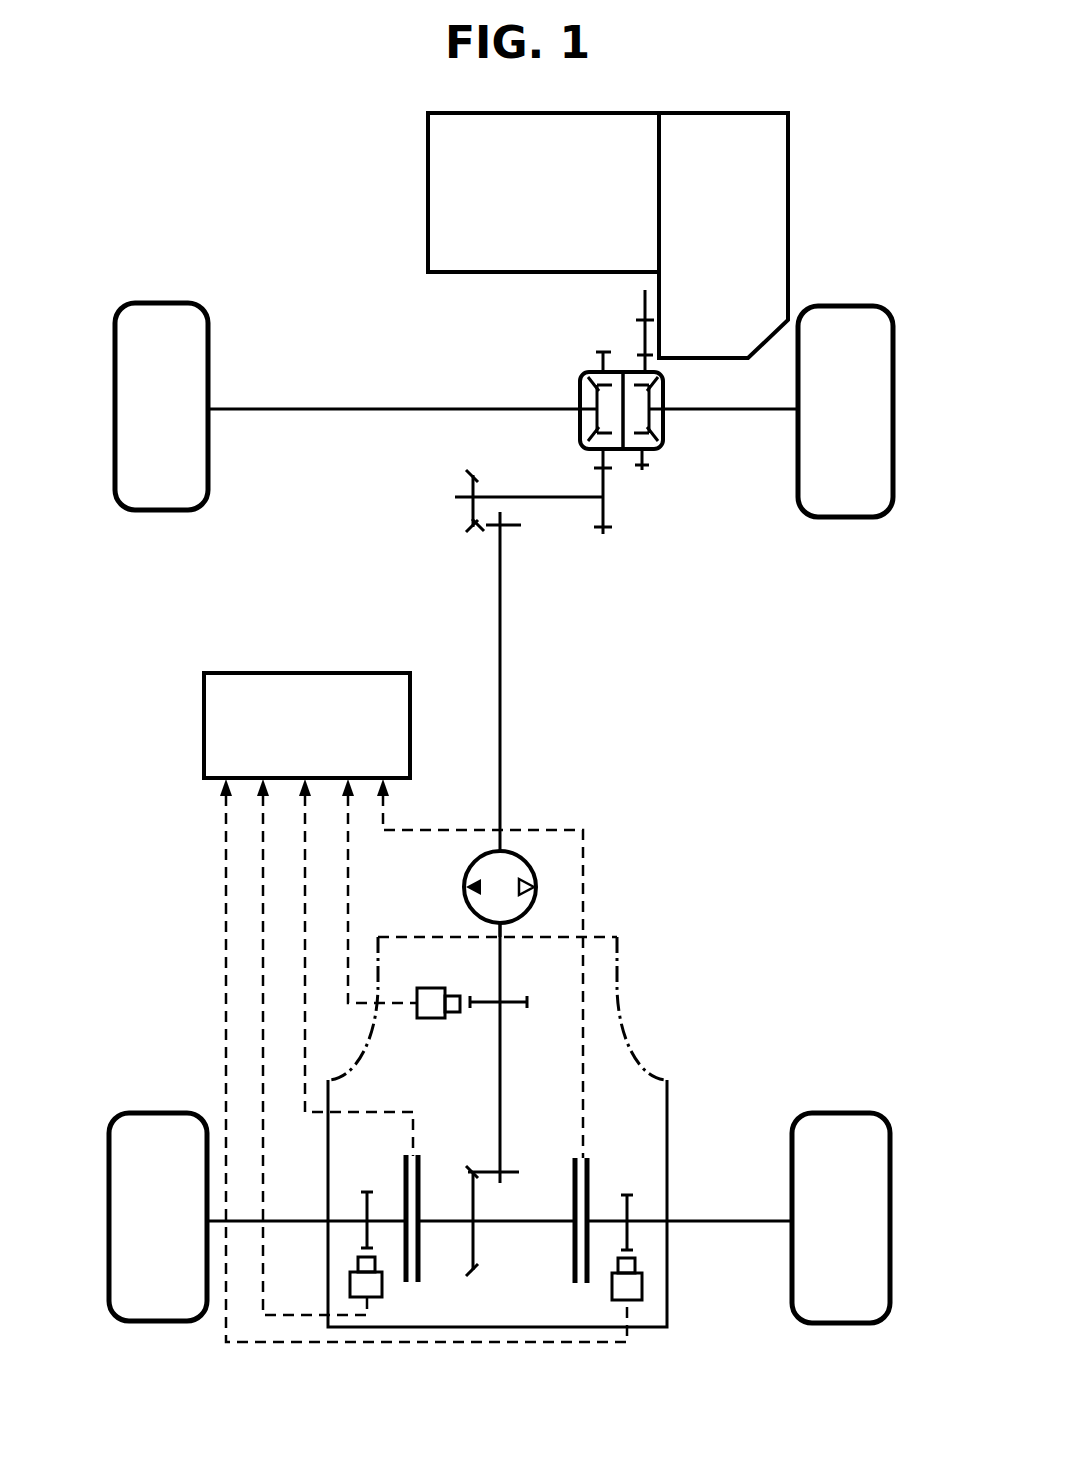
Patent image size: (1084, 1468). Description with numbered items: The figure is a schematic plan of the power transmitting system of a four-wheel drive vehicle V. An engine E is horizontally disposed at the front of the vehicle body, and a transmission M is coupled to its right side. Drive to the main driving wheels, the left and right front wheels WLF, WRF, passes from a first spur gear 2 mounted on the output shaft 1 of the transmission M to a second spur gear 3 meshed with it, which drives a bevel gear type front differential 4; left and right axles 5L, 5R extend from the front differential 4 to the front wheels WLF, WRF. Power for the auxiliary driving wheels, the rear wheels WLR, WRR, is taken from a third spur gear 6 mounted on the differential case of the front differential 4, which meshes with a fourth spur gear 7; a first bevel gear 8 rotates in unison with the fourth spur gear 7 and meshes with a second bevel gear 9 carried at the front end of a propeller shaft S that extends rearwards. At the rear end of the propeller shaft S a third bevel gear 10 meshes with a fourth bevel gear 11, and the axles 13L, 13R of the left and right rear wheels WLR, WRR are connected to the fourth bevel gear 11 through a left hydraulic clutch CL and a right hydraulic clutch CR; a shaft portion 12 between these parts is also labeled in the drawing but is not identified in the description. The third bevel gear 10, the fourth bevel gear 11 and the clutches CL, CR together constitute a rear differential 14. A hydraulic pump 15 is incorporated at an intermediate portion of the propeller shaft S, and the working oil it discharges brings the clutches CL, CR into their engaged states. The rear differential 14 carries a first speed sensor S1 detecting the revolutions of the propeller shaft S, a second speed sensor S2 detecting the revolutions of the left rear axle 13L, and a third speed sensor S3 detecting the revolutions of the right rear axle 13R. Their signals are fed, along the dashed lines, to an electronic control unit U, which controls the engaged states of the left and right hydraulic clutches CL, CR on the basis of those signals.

The output shaft 1 is at (650, 310).
The first spur gear 2 is at (644, 290).
The second spur gear 3 is at (646, 472).
The front differential 4 is at (664, 407).
The left axle 5L is at (282, 410).
The right axle 5R is at (727, 411).
The third spur gear 6 is at (608, 472).
The fourth spur gear 7 is at (603, 532).
The first bevel gear 8 is at (475, 480).
The second bevel gear 9 is at (519, 526).
The third bevel gear 10 is at (519, 1170).
The fourth bevel gear 11 is at (472, 1262).
The rear axle intermediate shaft 12 is at (524, 1226).
The axle of the left rear wheel 13L is at (297, 1220).
The axle of the right rear wheel 13R is at (703, 1220).
The rear differential 14 is at (638, 1032).
The hydraulic pump 15 is at (525, 858).
The propeller shaft S is at (502, 738).
The first speed sensor S1 is at (433, 990).
The second speed sensor S2 is at (354, 1285).
The third speed sensor S3 is at (636, 1287).
The left hydraulic clutch CL is at (400, 1176).
The right hydraulic clutch CR is at (594, 1170).
The engine E is at (554, 208).
The transmission M is at (731, 245).
The electronic control unit U is at (312, 747).
The 4-wheel drive vehicle V is at (713, 758).
The left front wheel WLF is at (168, 302).
The right front wheel WRF is at (832, 306).
The left rear wheel WLR is at (158, 1178).
The right rear wheel WRR is at (818, 1113).